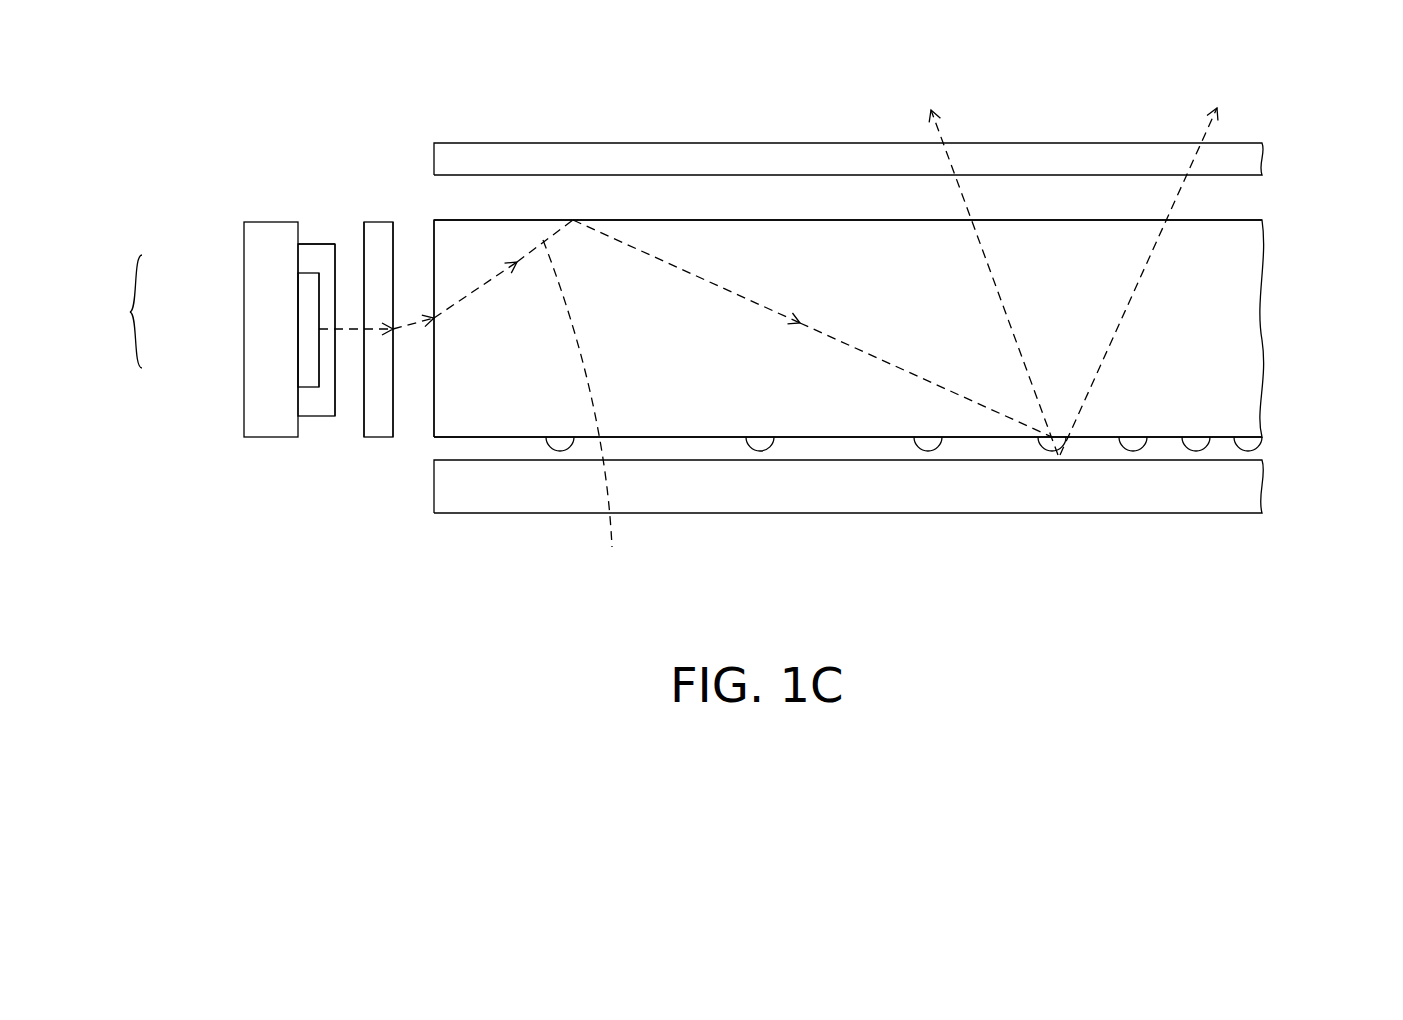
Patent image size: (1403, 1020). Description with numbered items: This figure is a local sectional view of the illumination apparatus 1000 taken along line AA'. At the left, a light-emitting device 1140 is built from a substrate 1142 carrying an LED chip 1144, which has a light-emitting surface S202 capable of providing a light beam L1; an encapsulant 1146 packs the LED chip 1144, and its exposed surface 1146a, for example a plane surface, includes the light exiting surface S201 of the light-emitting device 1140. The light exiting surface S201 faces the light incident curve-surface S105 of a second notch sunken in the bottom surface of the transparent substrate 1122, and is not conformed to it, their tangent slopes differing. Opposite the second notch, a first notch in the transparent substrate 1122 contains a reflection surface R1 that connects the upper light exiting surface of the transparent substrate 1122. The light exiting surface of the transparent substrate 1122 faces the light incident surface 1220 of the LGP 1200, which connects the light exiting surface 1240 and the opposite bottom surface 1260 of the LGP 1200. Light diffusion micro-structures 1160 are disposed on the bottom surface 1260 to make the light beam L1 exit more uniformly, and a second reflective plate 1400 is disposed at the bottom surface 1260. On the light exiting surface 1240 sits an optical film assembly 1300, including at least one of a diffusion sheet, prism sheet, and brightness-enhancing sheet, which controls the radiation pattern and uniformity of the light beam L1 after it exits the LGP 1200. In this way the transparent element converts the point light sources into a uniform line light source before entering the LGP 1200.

The illumination apparatus 1000 is at (1298, 547).
The light-emitting device 1140 is at (225, 384).
The substrate 1142 is at (257, 353).
The LED chip 1144 is at (305, 304).
The encapsulant 1146 is at (305, 258).
The surface of the encapsulant 1146a is at (300, 229).
The transparent substrate 1122 is at (382, 222).
The light incident curve-surface S105 is at (362, 242).
The reflection surface R1 is at (395, 270).
The light exiting surface S201 is at (335, 388).
The light-emitting surface S202 is at (320, 362).
The LGP 1200 is at (487, 410).
The light incident surface 1220 is at (433, 412).
The light exiting surface 1240 is at (527, 220).
The bottom surface 1260 is at (515, 437).
The light diffusion micro-structures 1160 is at (762, 444).
The optical film assembly 1300 is at (1248, 162).
The second reflective plate 1400 is at (1243, 485).
The light beam L1 is at (768, 349).